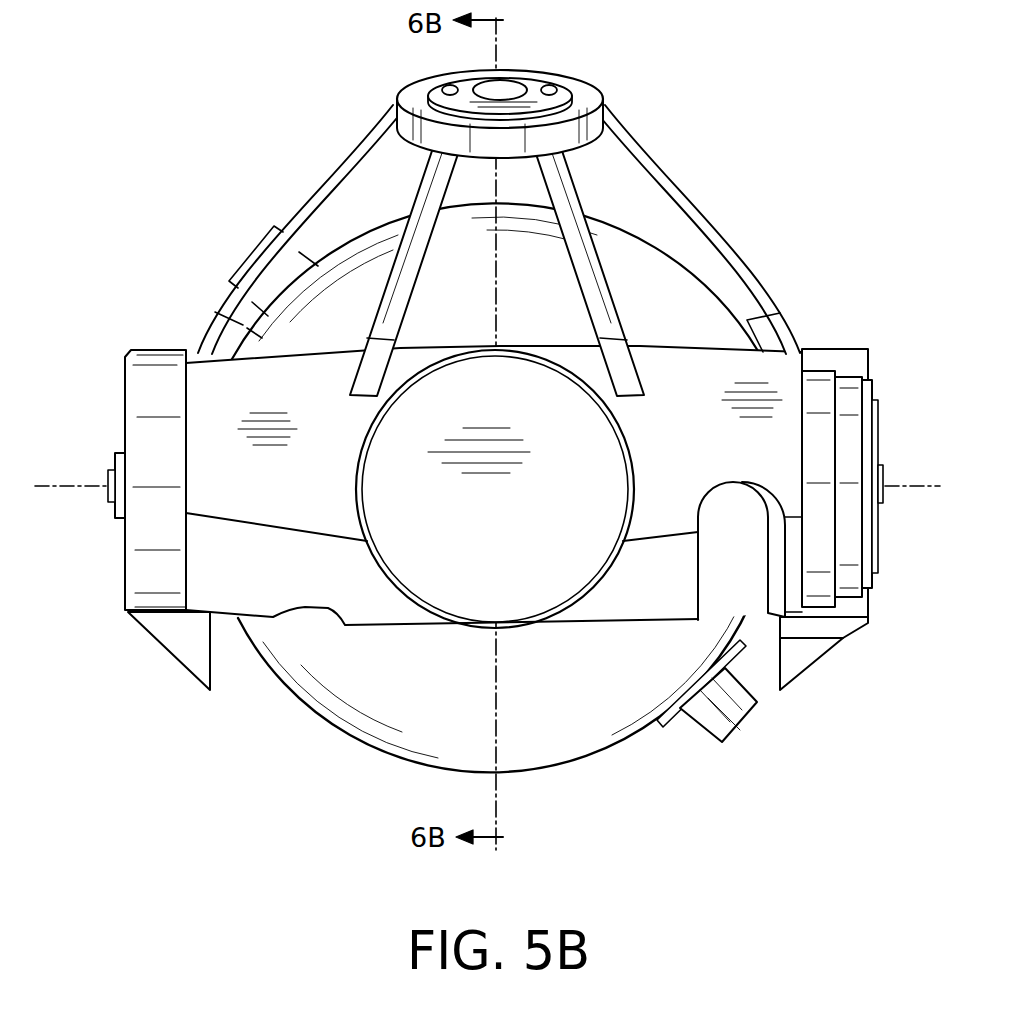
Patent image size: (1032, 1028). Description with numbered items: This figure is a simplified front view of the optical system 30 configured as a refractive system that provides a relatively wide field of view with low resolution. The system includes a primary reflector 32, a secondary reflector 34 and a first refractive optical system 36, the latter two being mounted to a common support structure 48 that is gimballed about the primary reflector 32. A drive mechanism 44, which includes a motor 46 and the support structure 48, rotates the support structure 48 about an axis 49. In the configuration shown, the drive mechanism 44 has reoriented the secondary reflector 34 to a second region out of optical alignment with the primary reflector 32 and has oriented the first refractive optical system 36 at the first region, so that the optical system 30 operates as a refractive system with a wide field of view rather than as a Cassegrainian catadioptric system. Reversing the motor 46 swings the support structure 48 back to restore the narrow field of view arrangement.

The optical system 30 is at (815, 199).
The primary reflector 32 is at (681, 318).
The secondary reflector 34 is at (604, 97).
The first refractive optical system 36 is at (473, 551).
The drive mechanism 44 is at (873, 408).
The motor 46 is at (880, 550).
The support structure 48 is at (330, 178).
The axis 49 is at (70, 490).